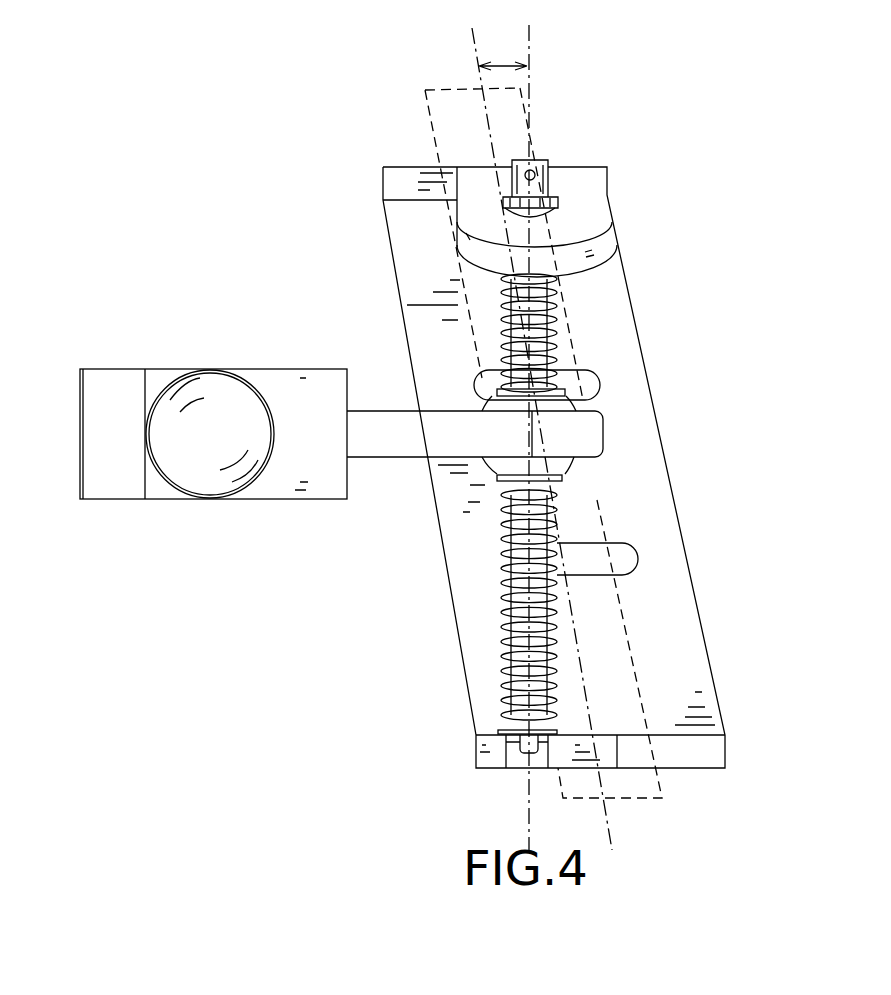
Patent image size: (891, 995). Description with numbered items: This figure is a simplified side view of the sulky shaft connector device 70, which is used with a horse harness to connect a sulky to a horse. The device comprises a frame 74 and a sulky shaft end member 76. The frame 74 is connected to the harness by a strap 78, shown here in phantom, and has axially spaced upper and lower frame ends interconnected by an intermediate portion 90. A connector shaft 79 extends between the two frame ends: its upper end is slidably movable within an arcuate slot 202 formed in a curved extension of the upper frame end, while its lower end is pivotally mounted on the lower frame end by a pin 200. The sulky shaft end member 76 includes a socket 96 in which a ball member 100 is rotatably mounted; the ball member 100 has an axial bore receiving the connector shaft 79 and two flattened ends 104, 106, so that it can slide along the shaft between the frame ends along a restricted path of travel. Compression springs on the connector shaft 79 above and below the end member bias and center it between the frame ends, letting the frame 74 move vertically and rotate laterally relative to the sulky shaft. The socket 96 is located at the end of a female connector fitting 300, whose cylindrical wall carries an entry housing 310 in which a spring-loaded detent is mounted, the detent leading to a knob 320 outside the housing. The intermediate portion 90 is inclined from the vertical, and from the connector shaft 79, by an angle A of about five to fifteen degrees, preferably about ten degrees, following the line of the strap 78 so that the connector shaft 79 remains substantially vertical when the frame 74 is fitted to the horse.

The angle A is at (498, 63).
The sulky shaft connector device 70 is at (757, 222).
The frame 74 is at (690, 498).
The sulky shaft end member 76 is at (626, 417).
The strap 78 is at (453, 148).
The connector shaft 79 is at (517, 725).
The intermediate portion 90 is at (622, 320).
The socket 96 is at (593, 440).
The ball member 100 is at (565, 462).
The flattened end 104 is at (483, 367).
The flattened end 106 is at (498, 477).
The pin 200 is at (512, 768).
The arcuate slot 202 is at (553, 175).
The female connector fitting 300 is at (306, 494).
The entry housing 310 is at (322, 483).
The knob 320 is at (193, 450).